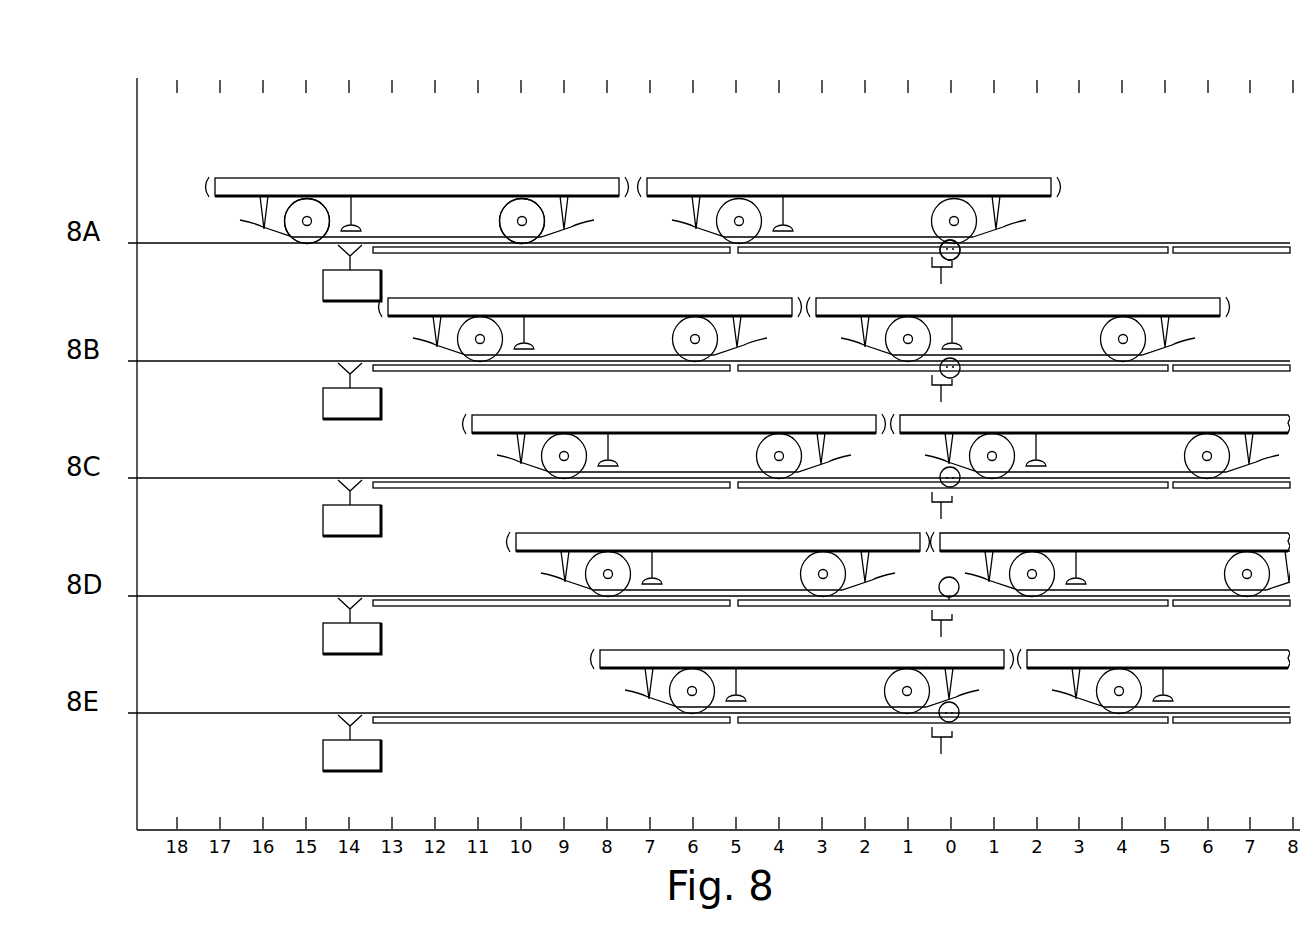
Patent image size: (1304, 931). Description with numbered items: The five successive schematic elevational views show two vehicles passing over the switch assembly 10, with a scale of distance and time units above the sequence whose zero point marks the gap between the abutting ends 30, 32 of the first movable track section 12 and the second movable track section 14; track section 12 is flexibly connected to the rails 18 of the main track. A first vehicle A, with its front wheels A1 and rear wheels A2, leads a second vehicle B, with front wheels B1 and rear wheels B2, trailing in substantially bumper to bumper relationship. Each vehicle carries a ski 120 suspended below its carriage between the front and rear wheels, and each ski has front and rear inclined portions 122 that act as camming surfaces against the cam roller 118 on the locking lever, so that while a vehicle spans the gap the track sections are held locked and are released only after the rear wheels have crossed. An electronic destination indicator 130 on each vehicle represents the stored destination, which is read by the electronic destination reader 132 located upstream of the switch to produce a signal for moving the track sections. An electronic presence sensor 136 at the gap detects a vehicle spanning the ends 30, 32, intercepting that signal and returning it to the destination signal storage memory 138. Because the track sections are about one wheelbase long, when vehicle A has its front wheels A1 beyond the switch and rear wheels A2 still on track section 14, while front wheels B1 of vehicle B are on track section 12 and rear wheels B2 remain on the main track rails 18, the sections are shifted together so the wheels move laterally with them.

In FIG. 8A, the switch assembly 10 is at (913, 53).
In FIG. 8A, the first movable track section 12 is at (786, 251).
In FIG. 8B, the first movable track section 12 is at (824, 370).
In FIG. 8C, the first movable track section 12 is at (824, 486).
In FIG. 8D, the first movable track section 12 is at (844, 603).
In FIG. 8E, the first movable track section 12 is at (821, 723).
In FIG. 8A, the second movable track section 14 is at (1128, 246).
In FIG. 8B, the second movable track section 14 is at (1119, 370).
In FIG. 8C, the second movable track section 14 is at (1112, 486).
In FIG. 8D, the second movable track section 14 is at (1102, 603).
In FIG. 8E, the second movable track section 14 is at (1132, 724).
In FIG. 8A, the rails of main track section 18 is at (634, 251).
In FIG. 8B, the rails of main track section 18 is at (604, 370).
In FIG. 8C, the rails of main track section 18 is at (614, 486).
In FIG. 8D, the rails of main track section 18 is at (646, 603).
In FIG. 8E, the rails of main track section 18 is at (646, 723).
In FIG. 8A, the abutting end of track section 12 30 is at (940, 256).
In FIG. 8A, the abutting end of track section 14 32 is at (984, 243).
In FIG. 8A, the cam roller 118 is at (959, 257).
In FIG. 8A, the ski 120 is at (464, 237).
In FIG. 8A, the inclined portion of ski 122 is at (270, 226).
In FIG. 8A, the electronic destination indicator 130 is at (362, 214).
In FIG. 8A, the electronic destination reader 132 is at (338, 257).
In FIG. 8A, the electronic presence sensor 136 is at (933, 275).
In FIG. 8A, the destination signal storage memory 138 is at (323, 294).
In FIG. 8A, the first vehicle A is at (830, 192).
In FIG. 8B, the first vehicle A is at (1067, 311).
In FIG. 8C, the first vehicle A is at (1090, 425).
In FIG. 8D, the first vehicle A is at (1162, 547).
In FIG. 8E, the first vehicle A is at (1203, 664).
In FIG. 8A, the front wheels of vehicle A A1 is at (955, 218).
In FIG. 8C, the front wheels of vehicle A A1 is at (1209, 456).
In FIG. 8A, the rear wheels of vehicle A A2 is at (741, 218).
In FIG. 8C, the rear wheels of vehicle A A2 is at (994, 456).
In FIG. 8A, the second vehicle B is at (556, 188).
In FIG. 8B, the second vehicle B is at (577, 308).
In FIG. 8C, the second vehicle B is at (687, 428).
In FIG. 8D, the second vehicle B is at (737, 547).
In FIG. 8E, the second vehicle B is at (775, 663).
In FIG. 8A, the front wheels of vehicle B B1 is at (523, 218).
In FIG. 8C, the front wheels of vehicle B B1 is at (780, 456).
In FIG. 8A, the rear wheels of vehicle B B2 is at (311, 218).
In FIG. 8C, the rear wheels of vehicle B B2 is at (565, 456).